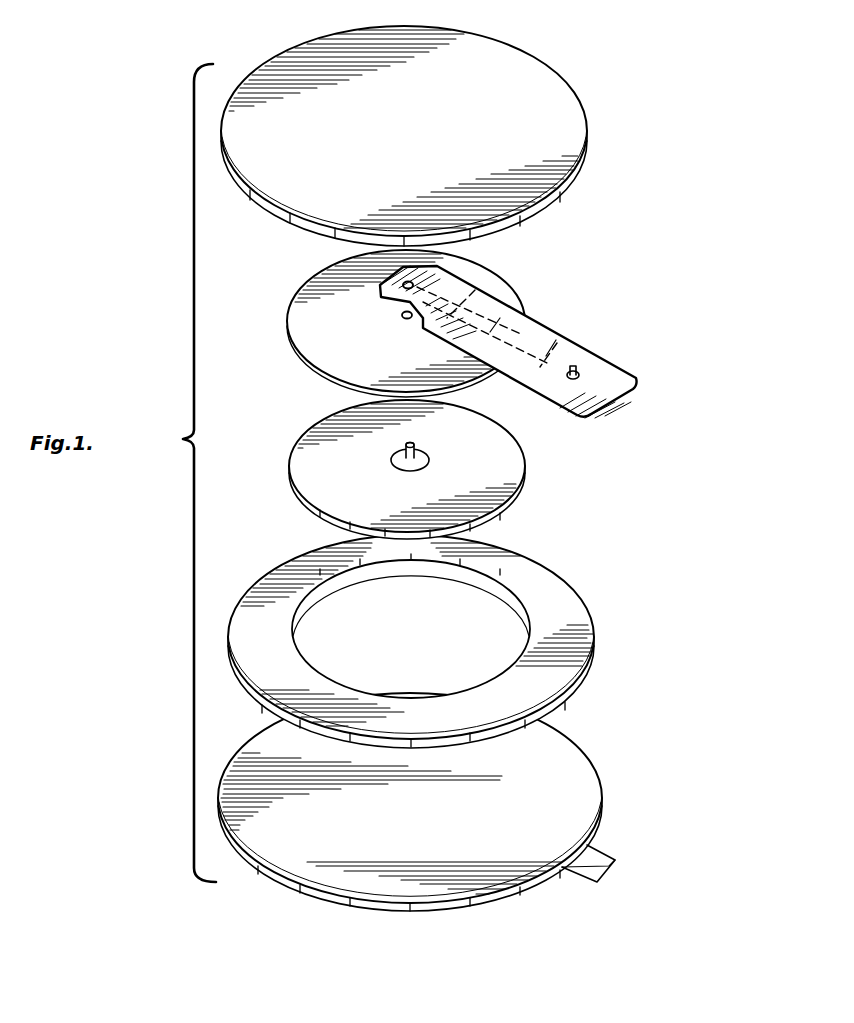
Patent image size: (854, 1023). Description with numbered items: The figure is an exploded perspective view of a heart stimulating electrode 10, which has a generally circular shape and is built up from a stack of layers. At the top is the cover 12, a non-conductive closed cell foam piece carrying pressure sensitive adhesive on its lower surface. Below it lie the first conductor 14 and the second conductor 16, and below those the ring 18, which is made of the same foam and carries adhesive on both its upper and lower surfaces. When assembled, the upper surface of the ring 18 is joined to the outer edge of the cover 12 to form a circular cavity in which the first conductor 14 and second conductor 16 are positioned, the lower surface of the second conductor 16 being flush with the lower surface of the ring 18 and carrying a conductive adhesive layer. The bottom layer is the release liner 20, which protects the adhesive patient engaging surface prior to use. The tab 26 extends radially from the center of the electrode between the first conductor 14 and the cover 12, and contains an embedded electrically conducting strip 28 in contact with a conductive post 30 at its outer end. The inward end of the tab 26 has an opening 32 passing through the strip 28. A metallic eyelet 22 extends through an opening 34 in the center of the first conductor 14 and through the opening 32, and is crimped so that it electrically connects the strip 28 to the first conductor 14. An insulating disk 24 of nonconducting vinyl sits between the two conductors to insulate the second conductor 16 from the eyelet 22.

The electrode 10 is at (630, 96).
The cover 12 is at (586, 160).
The first conductor 14 is at (302, 357).
The second conductor 16 is at (318, 455).
The ring 18 is at (563, 589).
The release liner 20 is at (568, 765).
The metallic eyelet 22 is at (400, 458).
The insulating disk 24 is at (427, 458).
The tab 26 is at (573, 339).
The electrically conducting strip 28 is at (542, 318).
The conductive post 30 is at (579, 372).
The opening 32 is at (411, 283).
The opening 34 is at (401, 312).